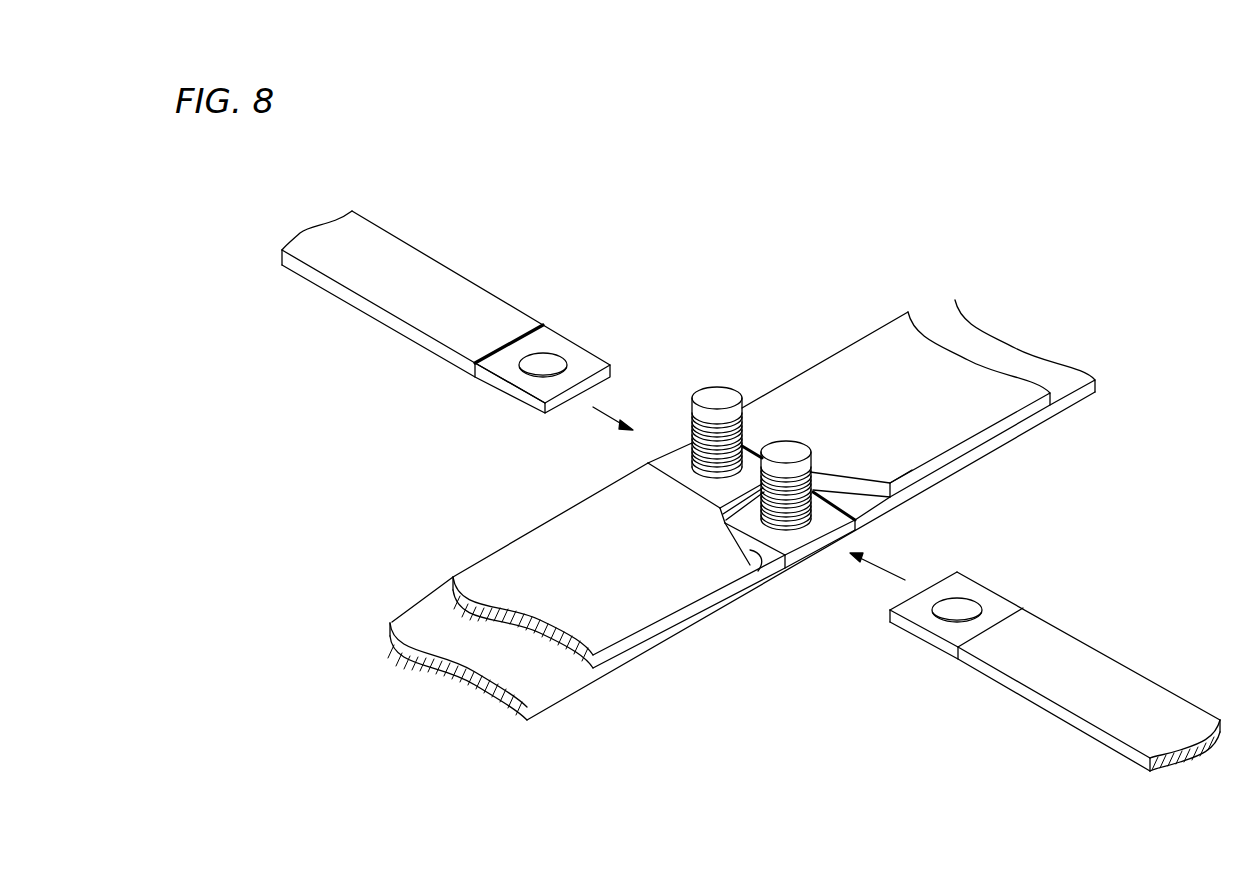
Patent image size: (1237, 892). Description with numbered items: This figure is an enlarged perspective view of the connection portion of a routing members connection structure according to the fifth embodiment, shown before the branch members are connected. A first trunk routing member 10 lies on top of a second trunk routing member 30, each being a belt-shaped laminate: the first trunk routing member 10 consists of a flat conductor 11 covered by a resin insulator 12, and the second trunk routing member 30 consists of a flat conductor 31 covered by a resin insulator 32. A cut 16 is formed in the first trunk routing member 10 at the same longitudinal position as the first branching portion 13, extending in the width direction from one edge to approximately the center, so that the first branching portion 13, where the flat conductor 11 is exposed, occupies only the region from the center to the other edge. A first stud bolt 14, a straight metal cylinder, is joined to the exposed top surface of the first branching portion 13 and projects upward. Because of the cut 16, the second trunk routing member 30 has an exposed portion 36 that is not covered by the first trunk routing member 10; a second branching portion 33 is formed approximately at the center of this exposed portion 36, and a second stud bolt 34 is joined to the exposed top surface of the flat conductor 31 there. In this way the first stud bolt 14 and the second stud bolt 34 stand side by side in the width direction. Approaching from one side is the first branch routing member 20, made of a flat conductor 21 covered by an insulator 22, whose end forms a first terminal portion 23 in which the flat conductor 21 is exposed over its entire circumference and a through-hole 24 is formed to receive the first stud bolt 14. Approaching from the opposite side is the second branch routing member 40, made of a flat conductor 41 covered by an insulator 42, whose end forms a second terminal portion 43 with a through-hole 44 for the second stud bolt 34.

The first trunk routing member 10 is at (868, 312).
The flat conductor 11 is at (670, 463).
The insulator 12 is at (847, 373).
The first branching portion 13 is at (685, 455).
The first stud bolt 14 is at (717, 397).
The cut 16 is at (852, 487).
The first branch routing member 20 is at (492, 275).
The flat conductor 21 is at (560, 337).
The insulator 22 is at (413, 243).
The first terminal portion 23 is at (523, 392).
The through-hole 24 is at (543, 390).
The second trunk routing member 30 is at (1030, 452).
The flat conductor 31 is at (817, 533).
The insulator 32 is at (673, 637).
The second branching portion 33 is at (790, 545).
The second stud bolt 34 is at (787, 450).
The exposed portion 36 is at (860, 505).
The second branch routing member 40 is at (1105, 632).
The flat conductor 41 is at (963, 572).
The insulator 42 is at (1165, 683).
The second terminal portion 43 is at (918, 612).
The through-hole 44 is at (942, 623).